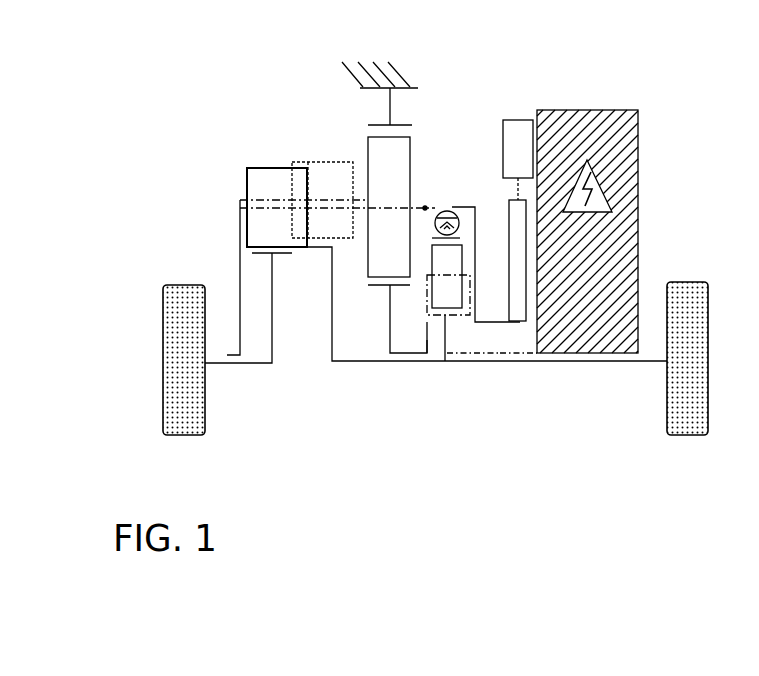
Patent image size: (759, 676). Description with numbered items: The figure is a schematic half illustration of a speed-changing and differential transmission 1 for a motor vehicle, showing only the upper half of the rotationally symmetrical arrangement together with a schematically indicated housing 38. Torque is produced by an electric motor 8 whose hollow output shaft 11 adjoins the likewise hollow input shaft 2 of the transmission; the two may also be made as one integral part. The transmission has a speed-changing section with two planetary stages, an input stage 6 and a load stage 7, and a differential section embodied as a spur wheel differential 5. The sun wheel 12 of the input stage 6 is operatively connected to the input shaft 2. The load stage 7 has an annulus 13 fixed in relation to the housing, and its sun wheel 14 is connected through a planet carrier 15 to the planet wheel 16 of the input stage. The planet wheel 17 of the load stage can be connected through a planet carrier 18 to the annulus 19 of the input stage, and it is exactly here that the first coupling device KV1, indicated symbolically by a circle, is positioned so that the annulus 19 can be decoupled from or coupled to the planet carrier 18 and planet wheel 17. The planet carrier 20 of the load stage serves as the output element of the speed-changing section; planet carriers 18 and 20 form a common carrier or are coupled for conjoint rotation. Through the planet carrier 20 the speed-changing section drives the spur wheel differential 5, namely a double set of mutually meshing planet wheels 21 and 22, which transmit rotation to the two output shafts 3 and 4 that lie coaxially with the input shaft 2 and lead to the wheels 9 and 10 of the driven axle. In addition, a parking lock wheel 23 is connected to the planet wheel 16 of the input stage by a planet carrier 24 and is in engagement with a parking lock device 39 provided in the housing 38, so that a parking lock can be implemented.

The speed-changing and differential transmission 1 is at (206, 164).
The input shaft 2 is at (467, 355).
The output shaft 3 is at (365, 363).
The output shaft 4 is at (250, 365).
The spur wheel differential 5 is at (268, 132).
The input stage 6 is at (446, 421).
The load stage 7 is at (390, 421).
The electric motor 8 is at (638, 140).
The wheel 9 is at (182, 288).
The wheel 10 is at (682, 290).
The output shaft 11 is at (528, 355).
The sun wheel 12 is at (445, 335).
The annulus 13 is at (392, 110).
The sun wheel 14 is at (381, 334).
The planet carrier 15 is at (421, 326).
The planet wheel 16 is at (467, 255).
The planet wheel 17 is at (402, 142).
The planet carrier 18 is at (425, 208).
The annulus 19 is at (457, 212).
The planet carrier 20 is at (365, 208).
The planet wheel 21 is at (320, 170).
The planet wheel 22 is at (260, 173).
The parking lock wheel 23 is at (520, 317).
The planet carrier 24 is at (486, 281).
The housing 38 is at (395, 77).
The parking lock device 39 is at (513, 125).
The first coupling device KV1 is at (462, 189).